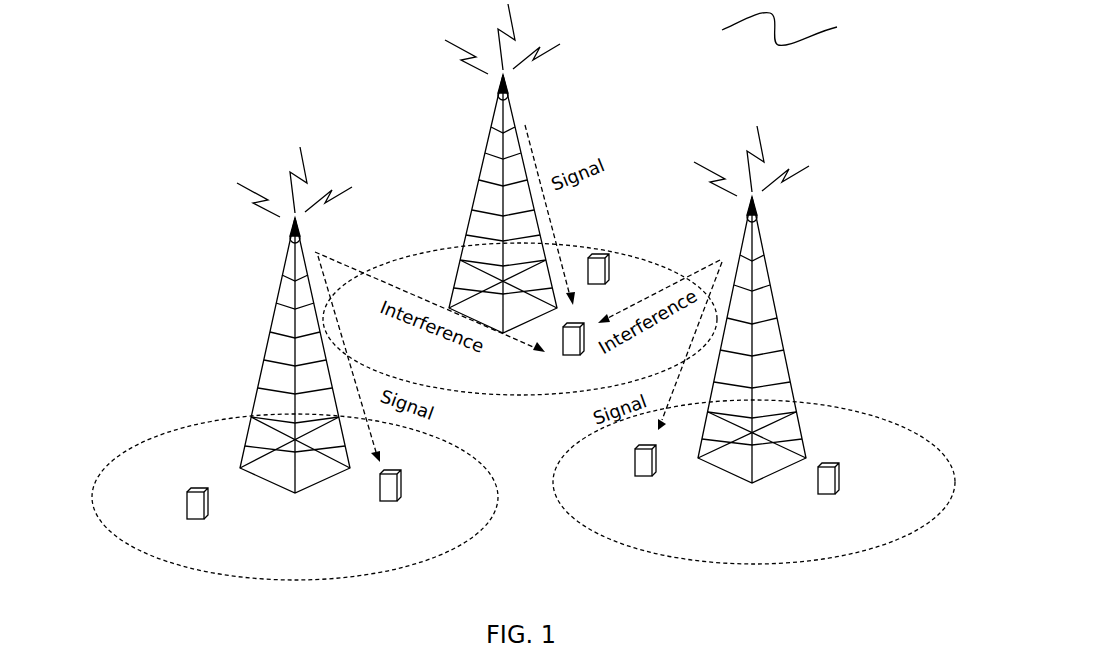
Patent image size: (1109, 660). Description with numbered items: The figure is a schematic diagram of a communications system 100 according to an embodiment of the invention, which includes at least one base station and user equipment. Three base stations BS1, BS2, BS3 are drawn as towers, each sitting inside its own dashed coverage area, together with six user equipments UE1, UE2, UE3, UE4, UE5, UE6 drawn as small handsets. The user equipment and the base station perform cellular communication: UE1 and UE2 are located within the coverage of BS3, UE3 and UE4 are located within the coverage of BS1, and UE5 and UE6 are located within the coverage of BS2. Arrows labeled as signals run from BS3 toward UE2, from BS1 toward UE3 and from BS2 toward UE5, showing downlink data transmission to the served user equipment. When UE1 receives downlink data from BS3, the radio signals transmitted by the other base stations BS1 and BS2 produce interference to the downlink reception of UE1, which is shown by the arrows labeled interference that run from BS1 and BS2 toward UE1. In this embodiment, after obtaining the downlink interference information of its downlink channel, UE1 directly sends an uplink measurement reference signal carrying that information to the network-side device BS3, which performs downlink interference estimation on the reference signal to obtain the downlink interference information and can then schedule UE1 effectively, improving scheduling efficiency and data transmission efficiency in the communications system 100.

The communications system 100 is at (804, 29).
The base station BS1 is at (286, 320).
The base station BS2 is at (758, 304).
The base station BS3 is at (528, 168).
The user equipment UE1 is at (577, 356).
The user equipment UE2 is at (605, 281).
The user equipment UE3 is at (392, 503).
The user equipment UE4 is at (196, 518).
The user equipment UE5 is at (644, 475).
The user equipment UE6 is at (824, 492).